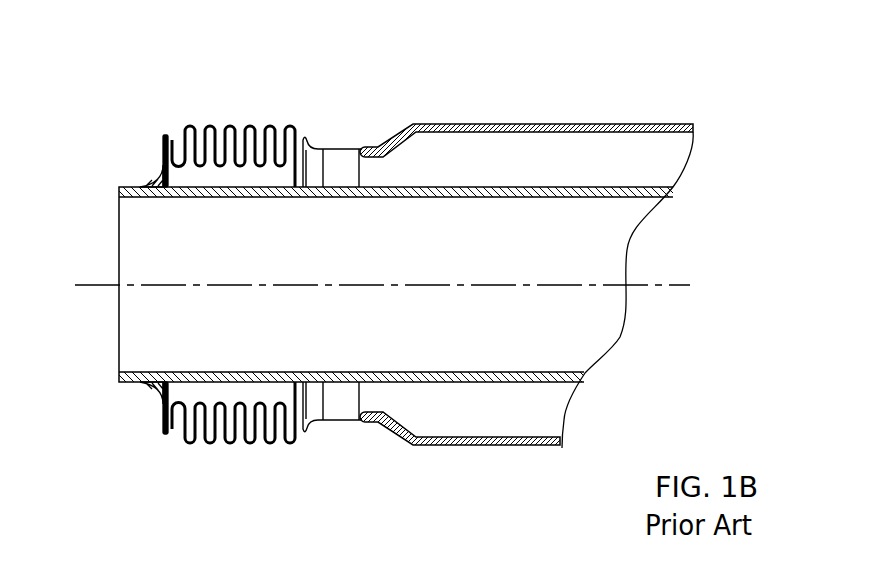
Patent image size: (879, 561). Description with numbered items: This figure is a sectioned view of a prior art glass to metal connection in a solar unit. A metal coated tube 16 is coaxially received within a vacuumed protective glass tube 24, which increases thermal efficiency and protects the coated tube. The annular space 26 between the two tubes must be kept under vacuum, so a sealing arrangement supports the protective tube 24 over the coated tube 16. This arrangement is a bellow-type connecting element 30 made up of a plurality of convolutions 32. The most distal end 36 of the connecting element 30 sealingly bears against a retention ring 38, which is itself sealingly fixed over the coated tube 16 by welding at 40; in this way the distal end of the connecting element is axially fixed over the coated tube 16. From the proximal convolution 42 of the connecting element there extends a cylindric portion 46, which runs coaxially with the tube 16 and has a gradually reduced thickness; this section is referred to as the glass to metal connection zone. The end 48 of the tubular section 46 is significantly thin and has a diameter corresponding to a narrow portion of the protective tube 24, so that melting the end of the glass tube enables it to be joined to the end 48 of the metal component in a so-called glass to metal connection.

The coated tube 16 is at (477, 188).
The protective glass tube 24 is at (565, 123).
The space 26 is at (605, 165).
The bellow-type connecting element 30 is at (248, 105).
The convolutions 32 is at (191, 124).
The most distal end 36 is at (166, 135).
The retention ring 38 is at (160, 181).
The welding 40 is at (138, 183).
The proximal convolution 42 is at (297, 132).
The cylindric portion 46 is at (347, 138).
The end of the tubular section 48 is at (368, 157).